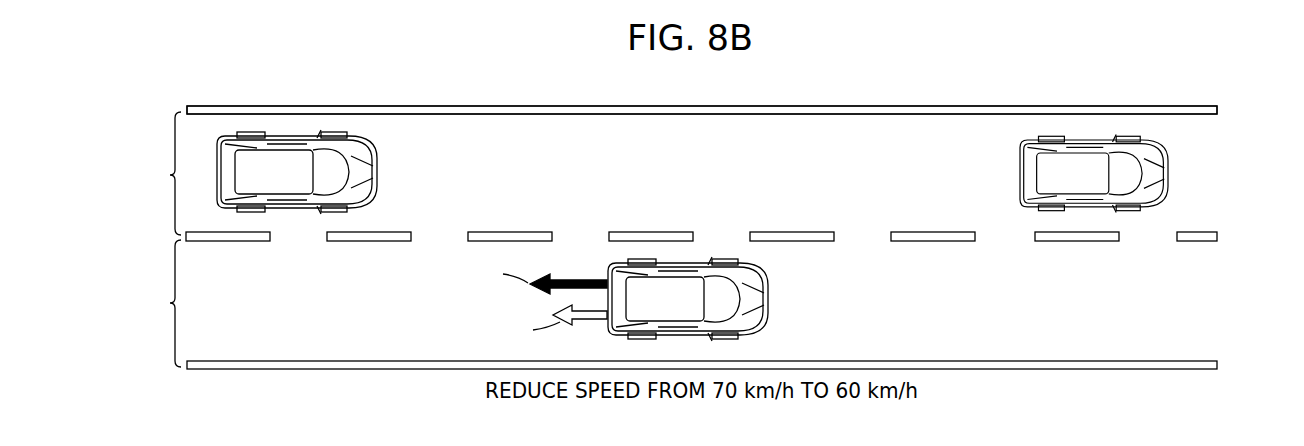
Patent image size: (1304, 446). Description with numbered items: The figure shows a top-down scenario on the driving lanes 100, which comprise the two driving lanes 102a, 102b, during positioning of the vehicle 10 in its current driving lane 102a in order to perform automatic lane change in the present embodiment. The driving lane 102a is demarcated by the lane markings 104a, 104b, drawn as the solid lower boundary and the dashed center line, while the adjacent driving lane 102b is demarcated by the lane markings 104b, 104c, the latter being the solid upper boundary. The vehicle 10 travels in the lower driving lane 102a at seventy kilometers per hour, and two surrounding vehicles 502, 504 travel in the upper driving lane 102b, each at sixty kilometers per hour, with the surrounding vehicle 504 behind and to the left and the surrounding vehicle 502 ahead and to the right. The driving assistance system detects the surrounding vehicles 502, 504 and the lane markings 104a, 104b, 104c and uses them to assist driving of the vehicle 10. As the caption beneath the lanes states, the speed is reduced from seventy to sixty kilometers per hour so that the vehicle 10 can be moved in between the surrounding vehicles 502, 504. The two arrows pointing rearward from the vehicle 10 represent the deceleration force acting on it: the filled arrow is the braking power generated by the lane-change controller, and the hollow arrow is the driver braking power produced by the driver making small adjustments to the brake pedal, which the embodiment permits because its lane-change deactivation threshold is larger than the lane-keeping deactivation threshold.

The driving lanes 100 is at (150, 135).
The driving lane 102a is at (147, 303).
The driving lane 102b is at (147, 173).
The lane marking 104a is at (1217, 365).
The lane marking 104b is at (1217, 237).
The lane marking 104c is at (1217, 110).
The vehicle 10 is at (758, 303).
The surrounding vehicle 502 is at (1162, 150).
The surrounding vehicle 504 is at (375, 162).